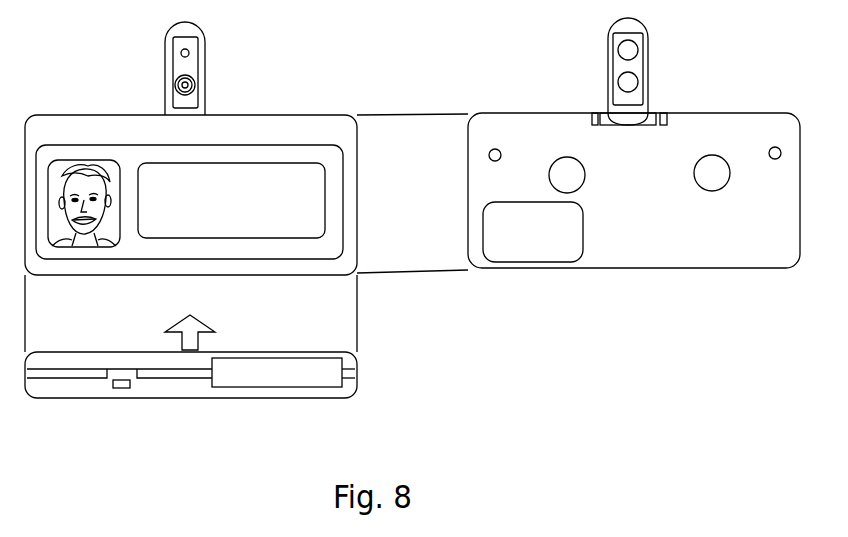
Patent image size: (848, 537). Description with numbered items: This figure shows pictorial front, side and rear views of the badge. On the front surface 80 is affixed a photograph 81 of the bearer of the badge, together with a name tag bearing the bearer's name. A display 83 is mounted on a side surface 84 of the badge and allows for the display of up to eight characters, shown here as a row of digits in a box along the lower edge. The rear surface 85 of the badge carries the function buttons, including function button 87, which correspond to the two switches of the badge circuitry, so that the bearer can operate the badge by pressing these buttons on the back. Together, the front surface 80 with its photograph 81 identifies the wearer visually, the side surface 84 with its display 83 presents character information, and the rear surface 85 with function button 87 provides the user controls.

The front surface 80 is at (320, 321).
The photograph 81 is at (77, 178).
The display 83 is at (297, 386).
The side surface 84 is at (102, 400).
The rear surface 85 is at (752, 269).
The function button 87 is at (712, 191).